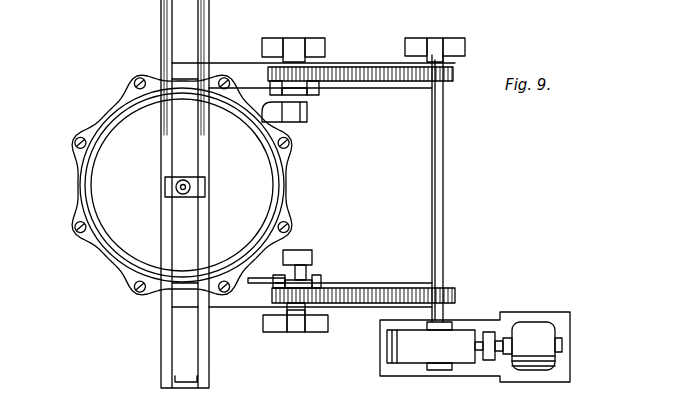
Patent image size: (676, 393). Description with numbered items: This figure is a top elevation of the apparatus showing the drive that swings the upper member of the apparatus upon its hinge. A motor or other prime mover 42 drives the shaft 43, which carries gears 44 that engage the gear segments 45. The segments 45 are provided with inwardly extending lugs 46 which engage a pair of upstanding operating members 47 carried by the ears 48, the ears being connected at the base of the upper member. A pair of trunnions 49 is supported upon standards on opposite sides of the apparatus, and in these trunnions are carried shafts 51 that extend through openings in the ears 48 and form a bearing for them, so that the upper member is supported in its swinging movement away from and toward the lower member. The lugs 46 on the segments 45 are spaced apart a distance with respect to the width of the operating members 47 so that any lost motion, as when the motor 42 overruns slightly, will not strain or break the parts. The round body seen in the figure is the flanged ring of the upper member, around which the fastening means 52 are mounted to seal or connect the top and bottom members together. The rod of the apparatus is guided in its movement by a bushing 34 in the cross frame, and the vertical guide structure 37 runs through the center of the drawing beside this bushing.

The bushing 34 is at (198, 189).
The guide rails 37 is at (168, 337).
The motor or prime mover 42 is at (535, 330).
The shaft 43 is at (441, 186).
The gear 44 is at (454, 75).
The gear segment 45 is at (365, 304).
The lug 46 is at (317, 282).
The operating member 47 is at (308, 263).
The ear 48 is at (257, 98).
The trunnion 49 is at (288, 328).
The shaft 51 is at (292, 60).
The fastening means 52 is at (77, 160).